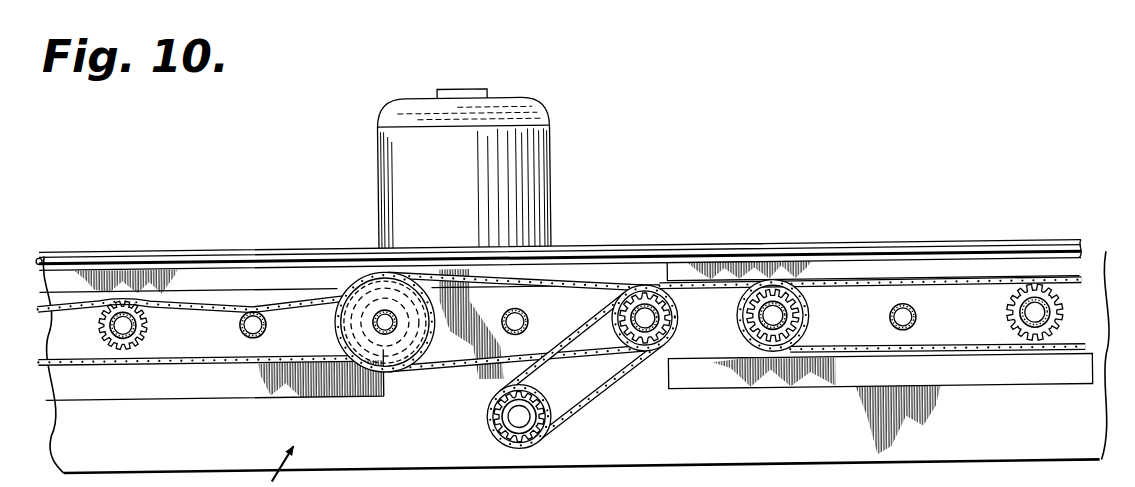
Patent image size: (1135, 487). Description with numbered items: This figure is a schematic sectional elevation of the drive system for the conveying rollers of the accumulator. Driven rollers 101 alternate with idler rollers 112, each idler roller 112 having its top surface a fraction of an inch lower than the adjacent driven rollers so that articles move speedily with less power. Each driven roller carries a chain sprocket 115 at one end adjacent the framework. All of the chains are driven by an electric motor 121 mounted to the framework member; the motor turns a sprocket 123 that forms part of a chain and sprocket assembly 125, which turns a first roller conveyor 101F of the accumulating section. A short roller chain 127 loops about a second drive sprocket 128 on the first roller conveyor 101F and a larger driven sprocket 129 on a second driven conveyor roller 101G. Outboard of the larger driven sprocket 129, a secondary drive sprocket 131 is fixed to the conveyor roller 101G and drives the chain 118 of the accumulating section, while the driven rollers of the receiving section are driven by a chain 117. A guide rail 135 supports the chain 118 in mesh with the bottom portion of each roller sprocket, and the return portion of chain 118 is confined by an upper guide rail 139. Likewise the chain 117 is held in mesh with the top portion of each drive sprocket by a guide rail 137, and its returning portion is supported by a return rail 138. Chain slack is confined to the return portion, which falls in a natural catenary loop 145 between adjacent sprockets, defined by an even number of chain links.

The driven roller 101 is at (770, 310).
The first roller conveyor 101F is at (641, 316).
The second driven conveyor roller 101G is at (381, 312).
The idler roller 112 is at (290, 366).
The chain sprocket 115 is at (165, 348).
The chain 117 is at (872, 290).
The chain 118 is at (190, 300).
The electric motor 121 is at (553, 142).
The sprocket 123 is at (544, 408).
The chain and sprocket assembly 125 is at (568, 424).
The short roller chain 127 is at (577, 287).
The second drive sprocket 128 is at (676, 322).
The larger driven sprocket 129 is at (413, 347).
The secondary drive sprocket 131 is at (416, 331).
The guide rail 135 is at (232, 382).
The guide rail 137 is at (1044, 263).
The return rail 138 is at (842, 372).
The upper guide rail 139 is at (233, 274).
The catenary loop 145 is at (246, 300).